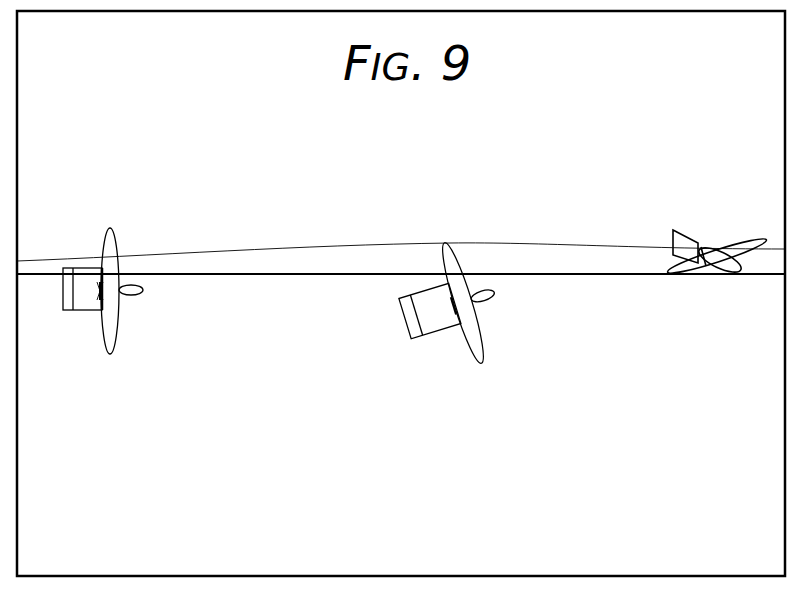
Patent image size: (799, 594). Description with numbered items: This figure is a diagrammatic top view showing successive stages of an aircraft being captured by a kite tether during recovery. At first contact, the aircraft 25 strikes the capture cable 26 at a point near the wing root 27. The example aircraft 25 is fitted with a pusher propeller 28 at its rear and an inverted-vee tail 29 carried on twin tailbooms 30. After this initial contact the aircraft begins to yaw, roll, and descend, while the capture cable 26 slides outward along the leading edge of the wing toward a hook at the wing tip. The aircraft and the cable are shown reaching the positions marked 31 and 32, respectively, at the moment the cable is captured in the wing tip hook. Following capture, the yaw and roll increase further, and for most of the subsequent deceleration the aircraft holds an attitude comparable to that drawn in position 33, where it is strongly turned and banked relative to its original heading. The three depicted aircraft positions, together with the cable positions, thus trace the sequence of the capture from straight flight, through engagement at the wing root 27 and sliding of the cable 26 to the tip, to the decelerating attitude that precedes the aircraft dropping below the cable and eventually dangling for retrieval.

The aircraft 25 is at (131, 330).
The capture cable 26 is at (177, 278).
The wing root 27 is at (127, 272).
The pusher propeller 28 is at (93, 300).
The inverted-vee tail 29 is at (53, 298).
The twin tailbooms 30 is at (83, 263).
The aircraft position at moment of capture 31 is at (452, 333).
The cable position at moment of capture 32 is at (446, 237).
The aircraft position during deceleration 33 is at (688, 278).